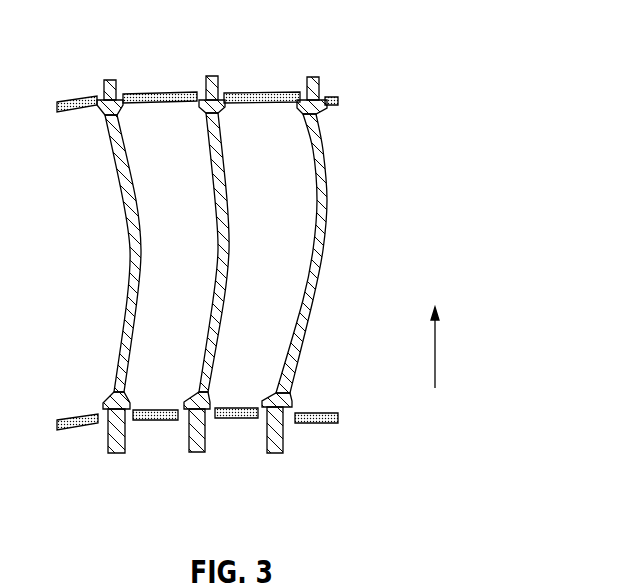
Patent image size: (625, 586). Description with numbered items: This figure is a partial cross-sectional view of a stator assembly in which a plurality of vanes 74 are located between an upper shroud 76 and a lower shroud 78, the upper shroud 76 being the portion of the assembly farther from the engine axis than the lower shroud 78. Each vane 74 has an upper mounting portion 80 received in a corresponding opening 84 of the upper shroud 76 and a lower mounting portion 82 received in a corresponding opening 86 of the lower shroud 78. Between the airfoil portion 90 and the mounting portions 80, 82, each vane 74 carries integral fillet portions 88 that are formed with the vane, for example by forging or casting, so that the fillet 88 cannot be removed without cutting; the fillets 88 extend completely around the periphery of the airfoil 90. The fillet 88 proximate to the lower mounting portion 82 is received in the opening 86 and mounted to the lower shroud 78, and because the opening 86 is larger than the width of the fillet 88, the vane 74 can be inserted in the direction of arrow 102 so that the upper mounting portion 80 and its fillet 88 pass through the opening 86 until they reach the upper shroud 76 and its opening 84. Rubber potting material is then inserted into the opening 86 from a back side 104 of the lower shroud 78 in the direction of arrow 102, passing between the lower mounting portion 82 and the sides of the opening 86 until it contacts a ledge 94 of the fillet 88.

The vane 74 is at (322, 276).
The upper shroud 76 is at (258, 91).
The lower shroud 78 is at (338, 411).
The upper mounting portion 80 is at (109, 78).
The lower mounting portion 82 is at (115, 454).
The opening 84 is at (119, 100).
The opening 86 is at (291, 421).
The integral fillet portion 88 is at (299, 109).
The airfoil portion 90 is at (327, 197).
The ledge 94 is at (290, 405).
The arrow 102 is at (437, 342).
The back side 104 is at (333, 423).